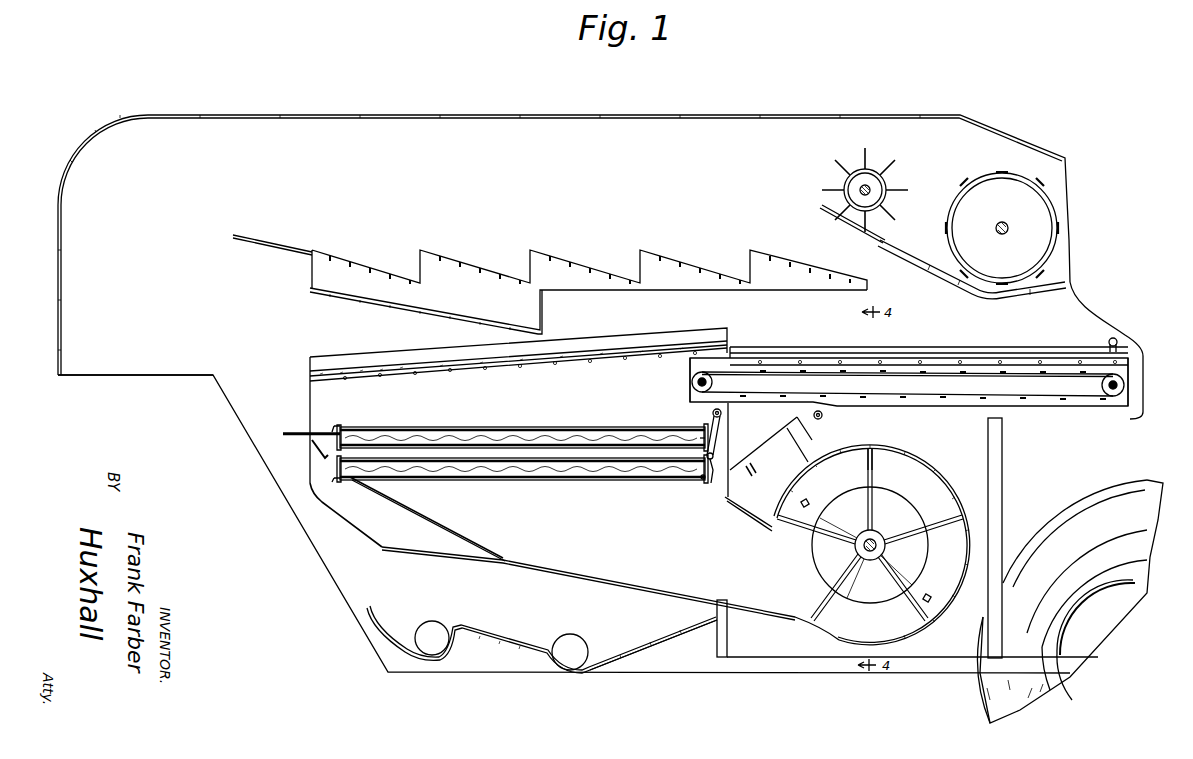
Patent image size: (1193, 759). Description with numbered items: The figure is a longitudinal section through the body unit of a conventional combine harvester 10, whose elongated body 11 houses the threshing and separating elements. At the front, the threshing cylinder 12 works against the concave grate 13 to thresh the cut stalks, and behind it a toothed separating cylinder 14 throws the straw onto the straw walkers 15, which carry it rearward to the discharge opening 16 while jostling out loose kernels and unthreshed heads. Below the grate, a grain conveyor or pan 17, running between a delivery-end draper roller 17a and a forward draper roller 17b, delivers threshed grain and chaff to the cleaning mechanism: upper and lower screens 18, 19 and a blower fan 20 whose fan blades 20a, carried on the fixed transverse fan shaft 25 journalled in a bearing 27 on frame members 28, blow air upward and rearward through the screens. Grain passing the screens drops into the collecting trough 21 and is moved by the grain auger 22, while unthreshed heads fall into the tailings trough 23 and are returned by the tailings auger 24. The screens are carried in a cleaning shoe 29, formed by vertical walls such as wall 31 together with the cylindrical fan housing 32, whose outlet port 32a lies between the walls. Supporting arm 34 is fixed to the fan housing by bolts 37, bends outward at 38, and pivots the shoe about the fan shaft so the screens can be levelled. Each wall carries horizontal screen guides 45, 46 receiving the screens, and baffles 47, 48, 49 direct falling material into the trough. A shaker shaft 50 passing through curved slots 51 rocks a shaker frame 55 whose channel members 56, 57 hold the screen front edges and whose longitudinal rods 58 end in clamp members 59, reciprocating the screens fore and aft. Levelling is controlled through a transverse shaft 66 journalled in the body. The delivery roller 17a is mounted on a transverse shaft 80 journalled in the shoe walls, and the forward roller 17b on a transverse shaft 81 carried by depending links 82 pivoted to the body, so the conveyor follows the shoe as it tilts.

The combine harvester 10 is at (250, 440).
The body 11 is at (490, 172).
The threshing cylinder 12 is at (990, 176).
The concave grate 13 is at (1005, 296).
The toothed separating cylinder 14 is at (844, 186).
The straw walkers 15 is at (312, 270).
The discharge opening 16 is at (162, 377).
The grain conveyor or pan 17 is at (993, 362).
The draper roller 17a is at (690, 391).
The draper roller 17b is at (1105, 398).
The upper screen 18 is at (526, 428).
The lower screen 19 is at (585, 462).
The blower fan 20 is at (800, 533).
The fan blades 20a is at (868, 477).
The collecting trough 21 is at (557, 671).
The grain auger 22 is at (582, 658).
The tailings trough 23 is at (428, 659).
The tailings auger 24 is at (437, 633).
The fan shaft 25 is at (895, 516).
The bearing 27 is at (885, 553).
The frame members 28 is at (870, 592).
The cleaning shoe 29 is at (310, 393).
The vertical plate or wall 31 is at (490, 407).
The fan housing 32 is at (933, 473).
The outlet port 32a is at (712, 568).
The supporting arm 34 is at (745, 508).
The bolts 37 is at (803, 498).
The outward bend 38 is at (745, 465).
The screen guide 45 is at (392, 425).
The screen guide 46 is at (450, 478).
The baffle 47 is at (320, 459).
The baffle 48 is at (350, 530).
The baffle 49 is at (452, 526).
The shaker shaft 50 is at (713, 414).
The curved slots 51 is at (724, 434).
The shaker frame 55 is at (714, 484).
The transverse channel member 56 is at (700, 441).
The transverse channel member 57 is at (693, 479).
The longitudinal rods 58 is at (572, 473).
The clamp members 59 is at (339, 425).
The transverse shaft 66 is at (822, 418).
The transverse shaft 80 is at (690, 381).
The transverse shaft 81 is at (1130, 389).
The depending links 82 is at (1109, 341).